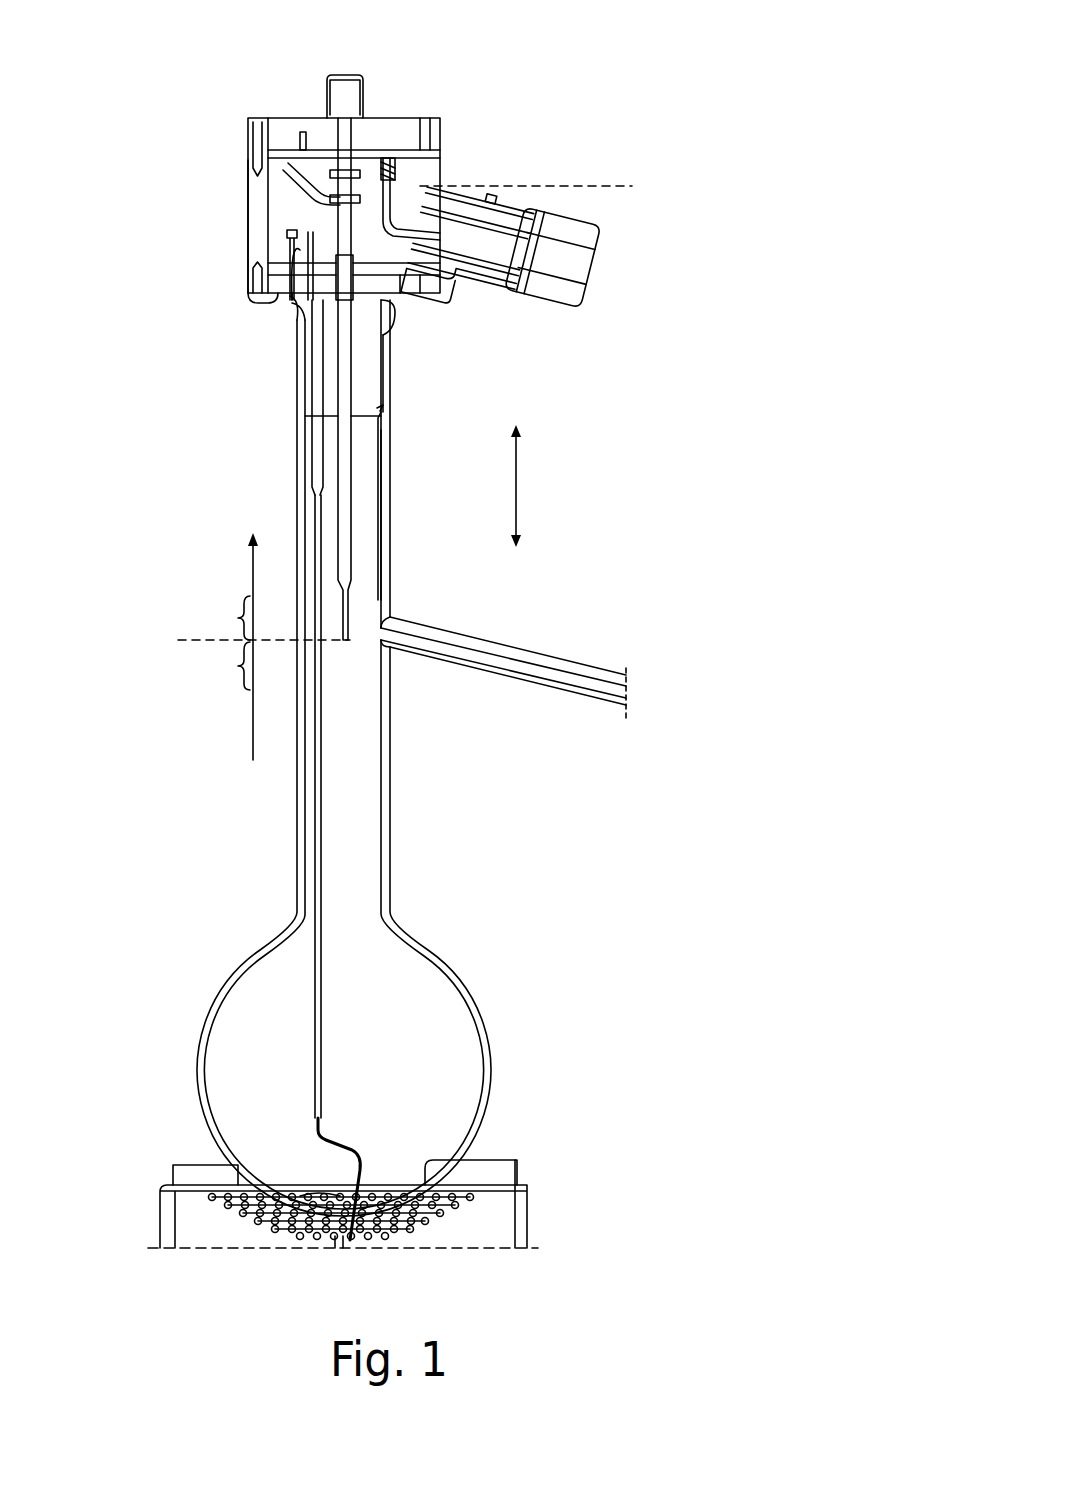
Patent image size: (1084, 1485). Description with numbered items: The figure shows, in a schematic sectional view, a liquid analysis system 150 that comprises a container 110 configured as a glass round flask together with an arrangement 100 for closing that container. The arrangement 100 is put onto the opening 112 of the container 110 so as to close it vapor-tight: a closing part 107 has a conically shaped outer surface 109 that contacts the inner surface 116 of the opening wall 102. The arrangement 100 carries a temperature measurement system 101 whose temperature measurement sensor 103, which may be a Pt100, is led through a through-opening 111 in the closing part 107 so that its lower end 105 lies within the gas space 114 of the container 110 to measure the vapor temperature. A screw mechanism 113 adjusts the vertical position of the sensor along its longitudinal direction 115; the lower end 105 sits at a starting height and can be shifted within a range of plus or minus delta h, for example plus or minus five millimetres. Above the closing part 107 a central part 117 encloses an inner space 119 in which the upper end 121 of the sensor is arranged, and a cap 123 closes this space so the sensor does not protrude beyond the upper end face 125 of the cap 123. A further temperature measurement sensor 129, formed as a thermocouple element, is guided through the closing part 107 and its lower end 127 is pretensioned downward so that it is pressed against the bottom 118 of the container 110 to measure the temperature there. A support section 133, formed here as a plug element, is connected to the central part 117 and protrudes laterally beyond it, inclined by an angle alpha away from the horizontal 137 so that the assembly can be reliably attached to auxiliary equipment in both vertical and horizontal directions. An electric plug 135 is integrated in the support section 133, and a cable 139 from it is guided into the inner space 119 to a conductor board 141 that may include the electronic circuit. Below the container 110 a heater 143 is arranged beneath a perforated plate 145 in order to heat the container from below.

The arrangement for closing a container 100 is at (190, 186).
The temperature measurement system 101 is at (368, 507).
The opening wall 102 is at (384, 398).
The temperature measurement sensor 103 is at (348, 540).
The lower end 105 is at (395, 622).
The closing part 107 is at (386, 362).
The outer surface 109 is at (388, 334).
The container 110 is at (455, 878).
The through-opening 111 is at (320, 416).
The opening 112 is at (369, 426).
The screw mechanism 113 is at (298, 92).
The gas space 114 is at (366, 742).
The longitudinal direction 115 is at (518, 485).
The inner surface 116 is at (383, 412).
The central part 117 is at (238, 160).
The bottom 118 is at (292, 1190).
The inner space 119 is at (282, 298).
The upper end 121 is at (316, 170).
The cap 123 is at (440, 132).
The upper end face 125 is at (369, 118).
The lower end 127 is at (366, 1163).
The further temperature measurement sensor 129 is at (323, 1003).
The support section 133 is at (548, 172).
The electric plug 135 is at (580, 282).
The horizontal 137 is at (615, 184).
The cable 139 is at (400, 202).
The conductor board 141 is at (420, 152).
The heater 143 is at (420, 1218).
The perforated plate 145 is at (196, 1173).
The liquid analysis system 150 is at (697, 108).